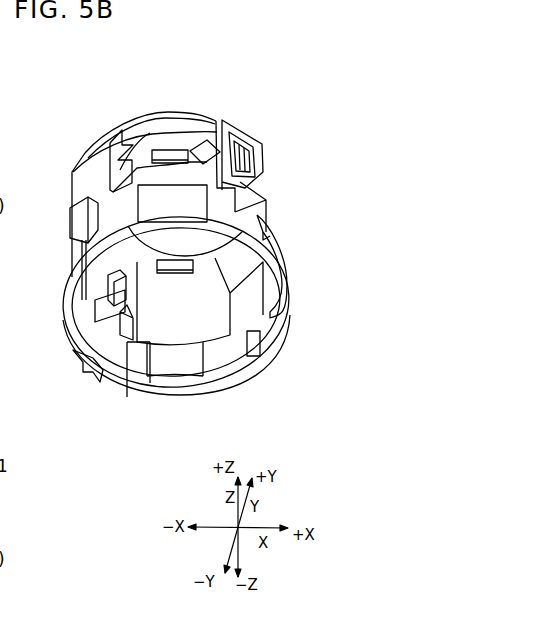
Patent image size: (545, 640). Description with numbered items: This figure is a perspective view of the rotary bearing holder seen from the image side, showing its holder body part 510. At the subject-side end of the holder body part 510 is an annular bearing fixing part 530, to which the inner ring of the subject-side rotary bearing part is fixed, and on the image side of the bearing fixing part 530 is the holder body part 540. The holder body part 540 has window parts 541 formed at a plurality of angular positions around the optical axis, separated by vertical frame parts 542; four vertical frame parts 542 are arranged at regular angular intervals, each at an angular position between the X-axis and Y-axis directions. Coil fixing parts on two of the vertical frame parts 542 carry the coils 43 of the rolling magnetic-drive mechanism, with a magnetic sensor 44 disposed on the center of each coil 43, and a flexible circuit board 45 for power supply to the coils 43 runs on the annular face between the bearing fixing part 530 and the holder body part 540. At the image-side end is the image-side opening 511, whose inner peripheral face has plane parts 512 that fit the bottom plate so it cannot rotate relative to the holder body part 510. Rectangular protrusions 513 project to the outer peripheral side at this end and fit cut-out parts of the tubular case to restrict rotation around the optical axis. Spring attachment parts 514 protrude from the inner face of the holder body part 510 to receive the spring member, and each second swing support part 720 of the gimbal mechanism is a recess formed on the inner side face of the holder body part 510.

The holder body part 510 is at (181, 242).
The bearing fixing part 530 is at (206, 127).
The holder body part 540 is at (253, 368).
The image-side opening 511 is at (220, 375).
The plane parts 512 is at (177, 370).
The protrusions 513 is at (85, 225).
The spring attachment parts 514 is at (173, 153).
The window parts 541 is at (132, 138).
The vertical frame parts 542 is at (72, 177).
The coil 43 is at (256, 170).
The magnetic sensors 44 is at (240, 155).
The flexible circuit board 45 is at (250, 137).
The second swing support parts 720 is at (112, 278).